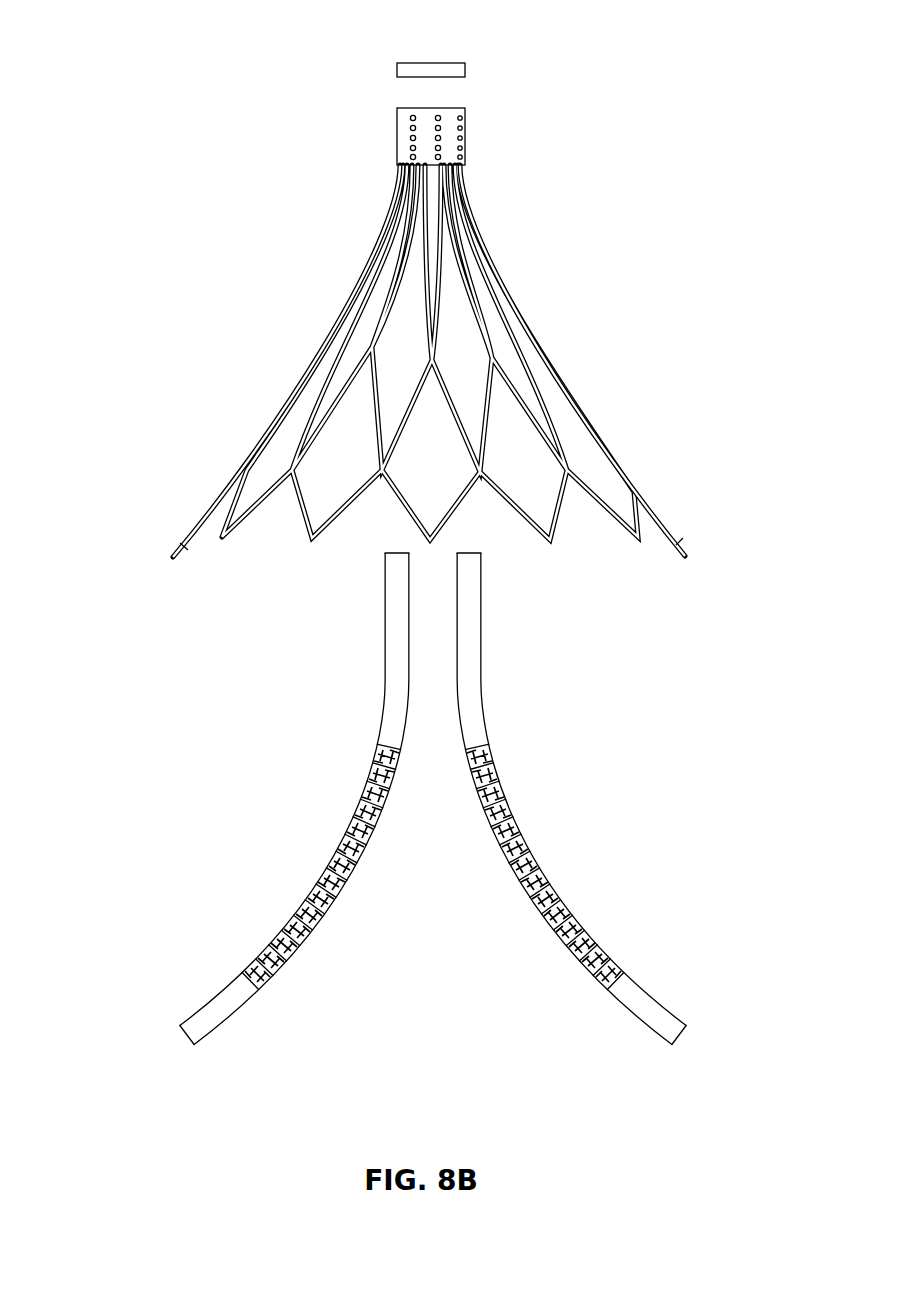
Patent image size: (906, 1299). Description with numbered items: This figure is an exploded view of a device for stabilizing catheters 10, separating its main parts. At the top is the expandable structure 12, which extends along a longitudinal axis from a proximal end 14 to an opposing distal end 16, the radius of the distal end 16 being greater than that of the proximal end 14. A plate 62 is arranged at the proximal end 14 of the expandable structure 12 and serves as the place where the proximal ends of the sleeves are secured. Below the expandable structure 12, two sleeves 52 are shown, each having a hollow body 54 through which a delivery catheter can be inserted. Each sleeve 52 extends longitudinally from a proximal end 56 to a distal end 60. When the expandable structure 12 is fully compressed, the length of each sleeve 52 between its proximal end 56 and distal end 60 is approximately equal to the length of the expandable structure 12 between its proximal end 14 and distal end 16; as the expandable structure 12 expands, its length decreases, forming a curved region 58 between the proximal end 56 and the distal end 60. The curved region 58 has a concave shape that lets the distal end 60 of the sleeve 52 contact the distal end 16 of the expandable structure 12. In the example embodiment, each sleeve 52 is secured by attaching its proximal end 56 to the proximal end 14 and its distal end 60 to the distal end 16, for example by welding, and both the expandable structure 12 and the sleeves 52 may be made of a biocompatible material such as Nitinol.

The device for stabilizing catheters 10 is at (300, 107).
The expandable structure 12 is at (512, 300).
The proximal end 14 is at (400, 108).
The distal end 16 is at (176, 554).
The plate 62 is at (437, 63).
The hollow body 54 is at (473, 607).
The proximal end 56 is at (388, 553).
The sleeve 52 is at (283, 978).
The curved region 58 is at (357, 856).
The distal end 60 is at (188, 1039).